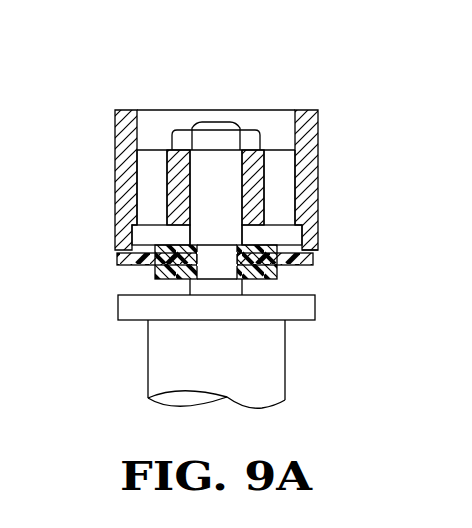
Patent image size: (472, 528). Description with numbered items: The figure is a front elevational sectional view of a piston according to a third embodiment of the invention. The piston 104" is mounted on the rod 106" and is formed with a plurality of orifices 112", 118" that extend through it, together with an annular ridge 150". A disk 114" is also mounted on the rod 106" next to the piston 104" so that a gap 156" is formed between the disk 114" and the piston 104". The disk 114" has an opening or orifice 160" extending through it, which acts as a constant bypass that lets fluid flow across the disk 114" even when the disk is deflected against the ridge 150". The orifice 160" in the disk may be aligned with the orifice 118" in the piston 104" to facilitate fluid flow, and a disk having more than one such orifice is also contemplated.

The piston 104 is at (318, 133).
The orifice 112 is at (160, 155).
The orifice 118 is at (276, 155).
The annular ridge 150 is at (123, 235).
The orifice 160 is at (290, 265).
The disk 114 is at (118, 263).
The gap 156 is at (340, 250).
The rod 106 is at (272, 363).